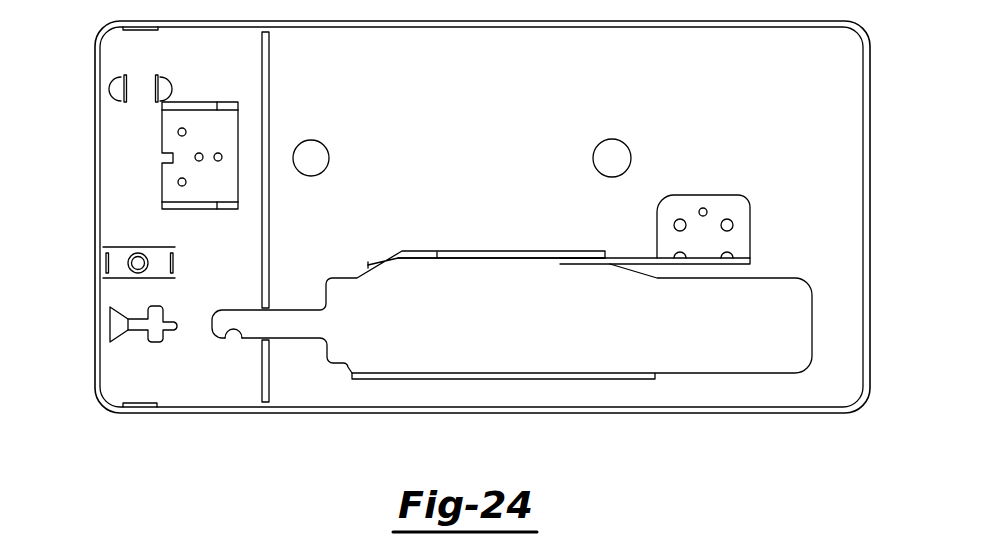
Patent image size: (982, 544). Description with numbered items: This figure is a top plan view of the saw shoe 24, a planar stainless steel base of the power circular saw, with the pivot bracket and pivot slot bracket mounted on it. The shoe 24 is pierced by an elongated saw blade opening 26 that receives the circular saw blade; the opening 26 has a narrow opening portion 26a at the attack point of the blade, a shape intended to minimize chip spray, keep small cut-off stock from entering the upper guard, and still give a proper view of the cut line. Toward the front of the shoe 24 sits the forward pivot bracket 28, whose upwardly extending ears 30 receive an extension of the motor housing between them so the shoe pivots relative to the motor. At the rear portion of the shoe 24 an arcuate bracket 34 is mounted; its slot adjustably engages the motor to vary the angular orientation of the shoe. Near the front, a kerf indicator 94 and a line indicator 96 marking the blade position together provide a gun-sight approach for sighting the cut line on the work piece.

The saw shoe 24 is at (483, 117).
The saw blade opening 26 is at (512, 359).
The narrow opening portion 26a is at (242, 343).
The forward pivot bracket 28 is at (156, 190).
The upwardly extending ears 30 is at (197, 102).
The arcuate bracket 34 is at (636, 250).
The kerf indicator 94 is at (136, 331).
The line indicator 96 is at (269, 375).